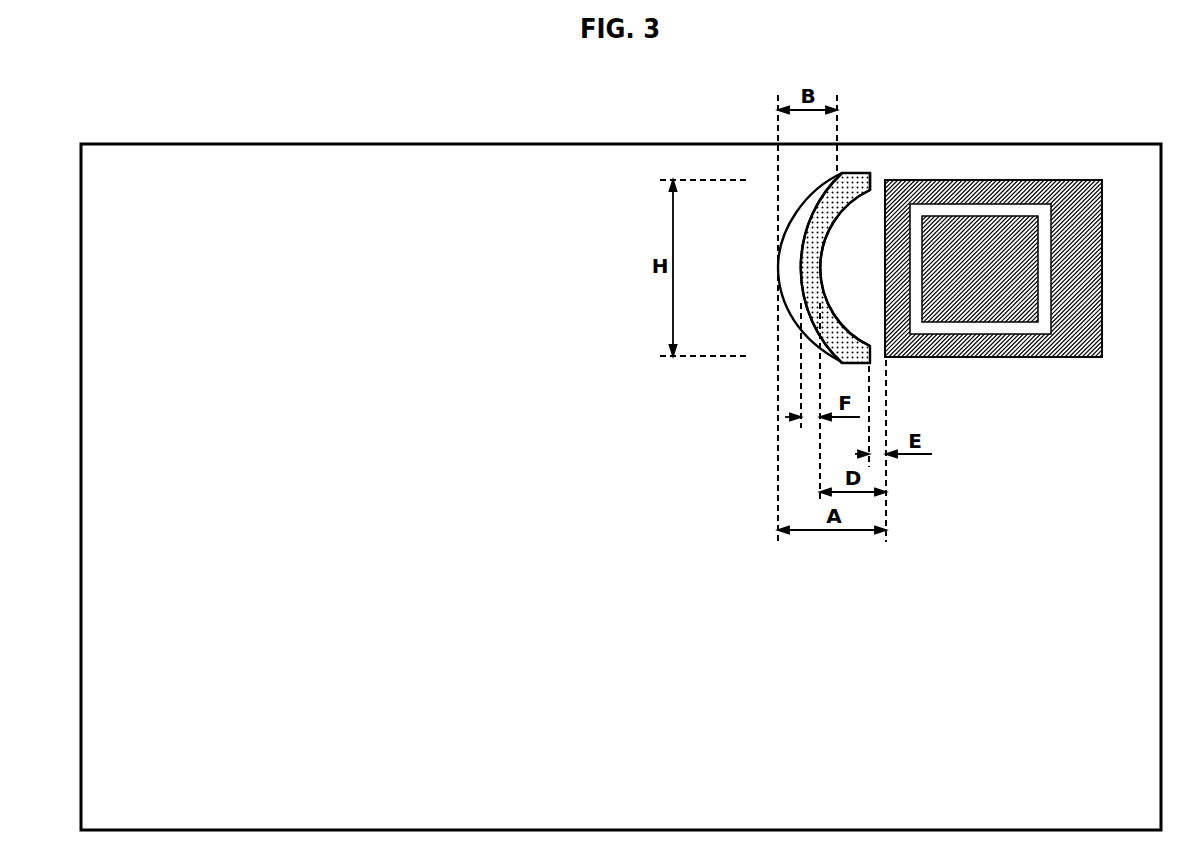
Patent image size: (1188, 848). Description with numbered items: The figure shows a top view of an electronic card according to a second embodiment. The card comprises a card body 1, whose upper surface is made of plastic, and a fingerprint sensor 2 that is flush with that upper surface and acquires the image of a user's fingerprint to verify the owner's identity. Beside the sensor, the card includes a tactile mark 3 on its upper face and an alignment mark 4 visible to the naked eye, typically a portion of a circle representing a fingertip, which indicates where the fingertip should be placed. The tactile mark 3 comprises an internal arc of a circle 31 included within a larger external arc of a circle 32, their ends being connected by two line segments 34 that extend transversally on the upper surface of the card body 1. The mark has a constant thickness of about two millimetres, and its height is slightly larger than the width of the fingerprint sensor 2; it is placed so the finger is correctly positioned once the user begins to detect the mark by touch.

The card body 1 is at (78, 493).
The fingerprint sensor 2 is at (993, 165).
The tactile mark 3 is at (810, 269).
The alignment mark 4 is at (778, 233).
The internal arc of a circle 31 is at (833, 219).
The external arc of a circle 32 is at (851, 170).
The line segments 34 is at (871, 183).